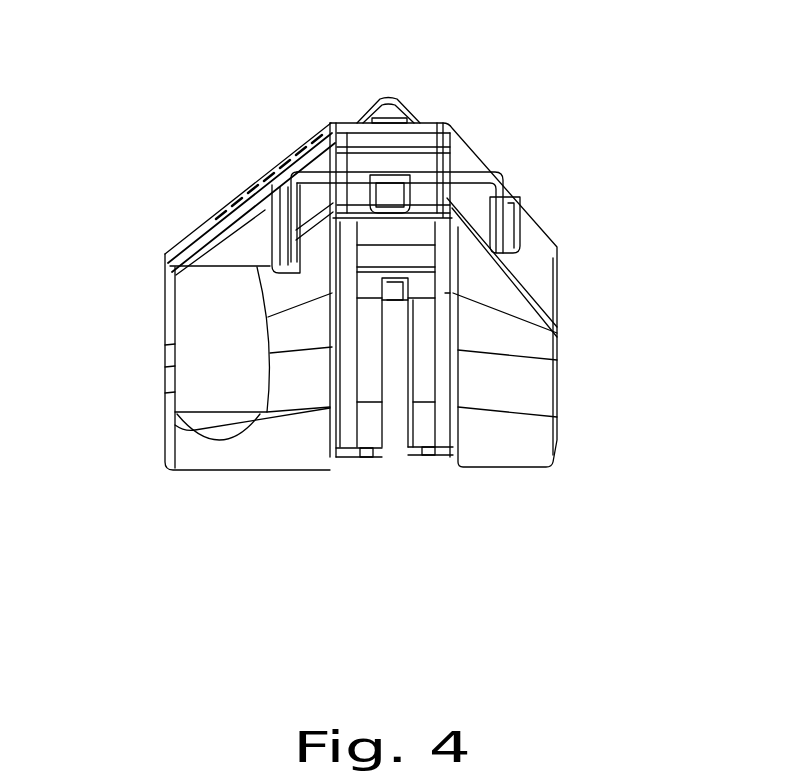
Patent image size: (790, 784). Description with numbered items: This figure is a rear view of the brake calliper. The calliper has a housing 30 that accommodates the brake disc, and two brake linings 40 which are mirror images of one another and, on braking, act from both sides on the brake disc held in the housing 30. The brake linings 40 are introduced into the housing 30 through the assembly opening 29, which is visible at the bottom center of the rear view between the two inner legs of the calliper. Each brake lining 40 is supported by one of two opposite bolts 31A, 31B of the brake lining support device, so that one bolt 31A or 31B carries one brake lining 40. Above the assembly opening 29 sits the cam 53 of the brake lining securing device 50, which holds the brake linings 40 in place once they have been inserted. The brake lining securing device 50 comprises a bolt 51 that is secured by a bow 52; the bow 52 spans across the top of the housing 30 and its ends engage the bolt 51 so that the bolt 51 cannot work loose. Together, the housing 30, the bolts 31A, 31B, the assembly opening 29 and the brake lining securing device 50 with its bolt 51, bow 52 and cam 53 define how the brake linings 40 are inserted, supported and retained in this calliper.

The assembly opening 29 is at (403, 410).
The housing 30 is at (540, 276).
The bolt 31A is at (431, 448).
The bolt 31B is at (361, 448).
The brake lining 40 is at (367, 340).
The brake lining securing device 50 is at (288, 126).
The bolt 51 is at (268, 186).
The bow 52 is at (470, 176).
The cam 53 is at (392, 188).